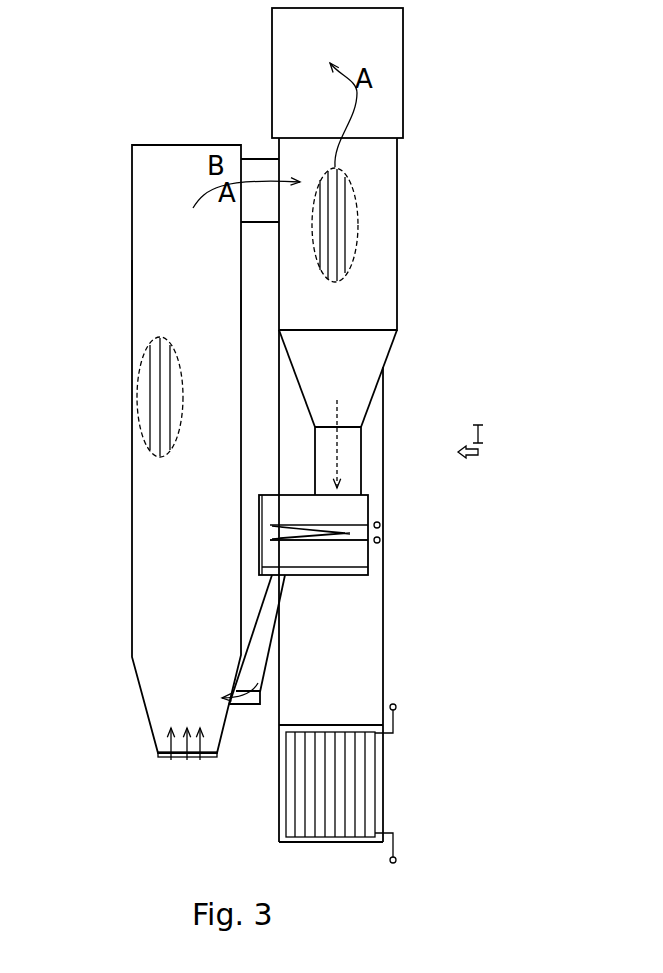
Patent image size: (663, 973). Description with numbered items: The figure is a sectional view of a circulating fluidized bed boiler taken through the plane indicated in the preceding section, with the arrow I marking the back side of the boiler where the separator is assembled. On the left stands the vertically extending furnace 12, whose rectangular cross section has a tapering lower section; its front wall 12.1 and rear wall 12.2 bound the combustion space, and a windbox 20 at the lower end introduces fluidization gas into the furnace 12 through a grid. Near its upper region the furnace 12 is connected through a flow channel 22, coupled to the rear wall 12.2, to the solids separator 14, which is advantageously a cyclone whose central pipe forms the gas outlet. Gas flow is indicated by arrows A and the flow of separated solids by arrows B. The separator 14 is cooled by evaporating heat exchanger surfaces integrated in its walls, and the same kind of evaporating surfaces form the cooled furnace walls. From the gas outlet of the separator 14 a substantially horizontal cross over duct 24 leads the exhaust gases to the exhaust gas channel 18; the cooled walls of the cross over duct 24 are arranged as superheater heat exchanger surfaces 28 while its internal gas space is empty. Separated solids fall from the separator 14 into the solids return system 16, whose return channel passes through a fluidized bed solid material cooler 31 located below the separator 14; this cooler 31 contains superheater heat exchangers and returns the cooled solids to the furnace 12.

The furnace 12 is at (197, 320).
The front wall 12.1 is at (130, 288).
The rear wall 12.2 is at (240, 317).
The solids separator 14 is at (385, 313).
The solids return system 16 is at (400, 457).
The exhaust gas channel 18 is at (407, 667).
The windbox 20 is at (182, 757).
The flow channel 22 is at (265, 170).
The cross over duct 24 is at (322, 47).
The superheater heat exchangers 28 is at (360, 523).
The fluidized bed solid material cooler 31 is at (318, 555).